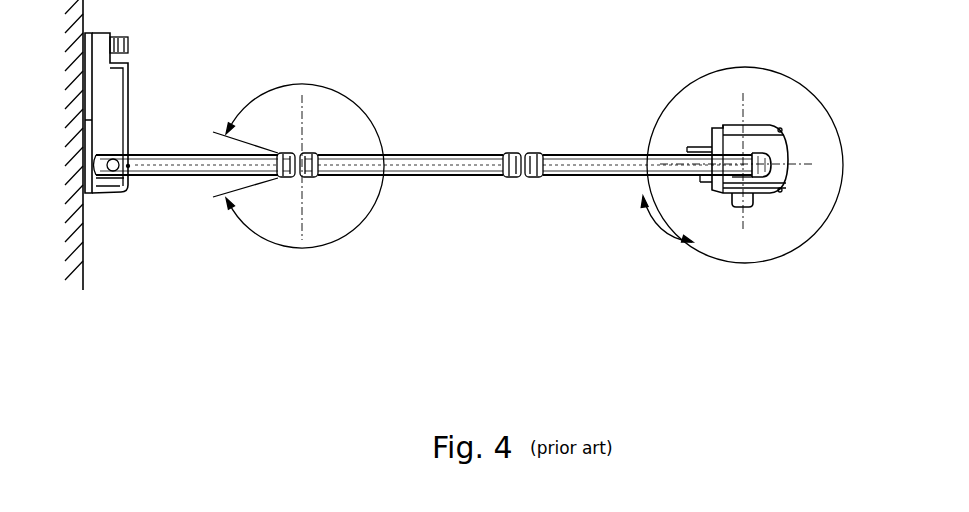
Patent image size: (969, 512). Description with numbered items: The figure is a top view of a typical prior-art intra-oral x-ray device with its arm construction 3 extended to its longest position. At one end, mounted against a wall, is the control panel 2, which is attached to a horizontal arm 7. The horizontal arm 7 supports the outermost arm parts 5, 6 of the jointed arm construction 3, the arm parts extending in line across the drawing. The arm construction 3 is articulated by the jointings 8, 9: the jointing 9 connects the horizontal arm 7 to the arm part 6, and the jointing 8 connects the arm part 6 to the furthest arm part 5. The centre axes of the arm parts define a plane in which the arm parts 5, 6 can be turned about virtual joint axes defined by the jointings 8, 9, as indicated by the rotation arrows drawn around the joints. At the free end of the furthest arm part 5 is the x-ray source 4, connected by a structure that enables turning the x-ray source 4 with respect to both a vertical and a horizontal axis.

The control panel 2 is at (130, 78).
The arm construction 3 is at (476, 149).
The x-ray source 4 is at (767, 128).
The arm part 5 is at (592, 174).
The arm part 6 is at (384, 153).
The horizontal arm 7 is at (175, 175).
The jointing 8 is at (525, 176).
The jointing 9 is at (318, 177).